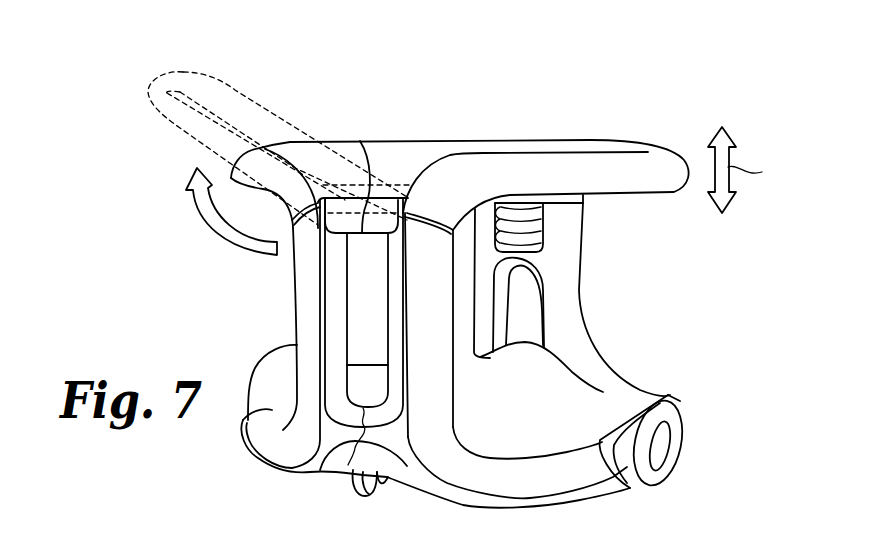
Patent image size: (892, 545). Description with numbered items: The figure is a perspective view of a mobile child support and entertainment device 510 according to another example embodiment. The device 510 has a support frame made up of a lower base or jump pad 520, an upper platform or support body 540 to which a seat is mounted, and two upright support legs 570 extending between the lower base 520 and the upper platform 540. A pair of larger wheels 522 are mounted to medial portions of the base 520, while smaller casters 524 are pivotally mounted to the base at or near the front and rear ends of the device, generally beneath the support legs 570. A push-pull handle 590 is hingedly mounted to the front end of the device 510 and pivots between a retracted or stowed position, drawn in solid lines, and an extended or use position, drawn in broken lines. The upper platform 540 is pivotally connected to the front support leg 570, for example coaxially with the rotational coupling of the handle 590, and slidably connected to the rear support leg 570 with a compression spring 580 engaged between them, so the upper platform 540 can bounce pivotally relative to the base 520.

The mobile child support and entertainment device 510 is at (104, 158).
The lower base or jump pad 520 is at (597, 378).
The larger wheels 522 is at (667, 460).
The smaller casters 524 is at (360, 483).
The upper platform or support body 540 is at (576, 143).
The upright support legs 570 is at (310, 290).
The compression spring 580 is at (533, 236).
The push-pull handle 590 is at (335, 330).